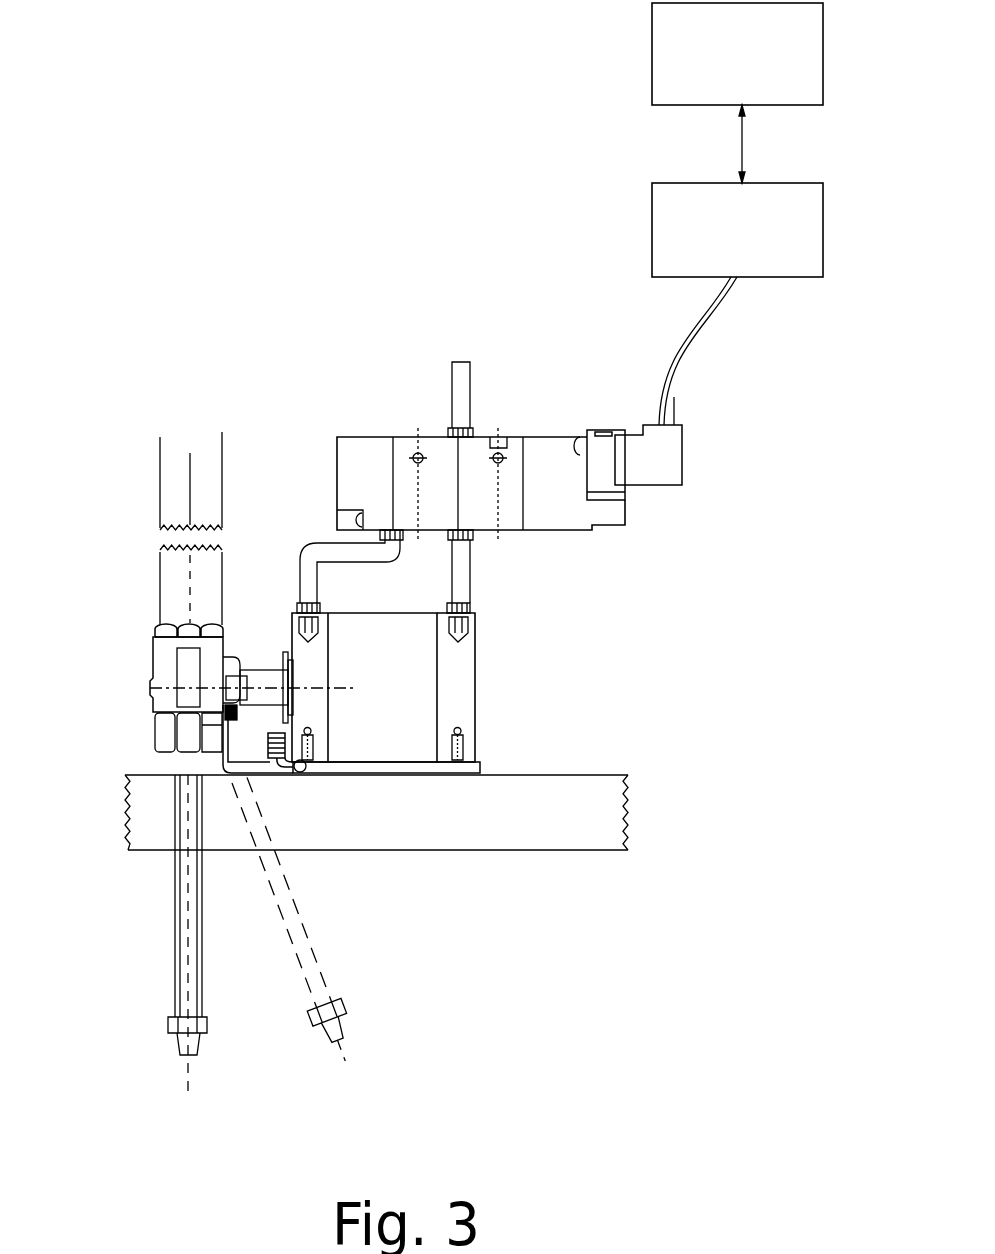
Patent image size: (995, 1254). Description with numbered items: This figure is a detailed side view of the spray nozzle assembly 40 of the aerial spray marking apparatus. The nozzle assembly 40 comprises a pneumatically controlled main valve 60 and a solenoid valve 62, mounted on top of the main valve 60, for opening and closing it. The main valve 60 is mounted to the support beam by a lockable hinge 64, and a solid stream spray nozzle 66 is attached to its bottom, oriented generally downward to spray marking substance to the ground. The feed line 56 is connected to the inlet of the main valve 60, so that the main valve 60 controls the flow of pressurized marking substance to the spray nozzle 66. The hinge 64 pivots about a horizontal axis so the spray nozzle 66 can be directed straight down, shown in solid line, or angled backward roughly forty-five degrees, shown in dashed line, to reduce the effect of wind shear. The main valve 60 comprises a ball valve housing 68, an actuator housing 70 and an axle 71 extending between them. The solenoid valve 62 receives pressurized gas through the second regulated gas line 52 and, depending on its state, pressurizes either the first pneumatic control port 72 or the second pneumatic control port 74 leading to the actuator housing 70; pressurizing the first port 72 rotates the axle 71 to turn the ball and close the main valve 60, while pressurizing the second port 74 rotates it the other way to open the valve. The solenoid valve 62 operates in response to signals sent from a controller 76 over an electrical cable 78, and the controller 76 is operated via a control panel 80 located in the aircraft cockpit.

The spray nozzle assembly 40 is at (337, 338).
The second regulated gas line 52 is at (475, 410).
The feed line 56 is at (143, 518).
The main valve 60 is at (466, 710).
The solenoid valve 62 is at (557, 490).
The lockable hinge 64 is at (402, 783).
The solid stream spray nozzle 66 is at (215, 1012).
The ball valve housing 68 is at (138, 707).
The actuator housing 70 is at (370, 725).
The axle 71 is at (247, 713).
The first pneumatic control port 72 is at (472, 579).
The second pneumatic control port 74 is at (300, 543).
The controller 76 is at (652, 250).
The electrical cable 78 is at (695, 332).
The control panel 80 is at (652, 72).